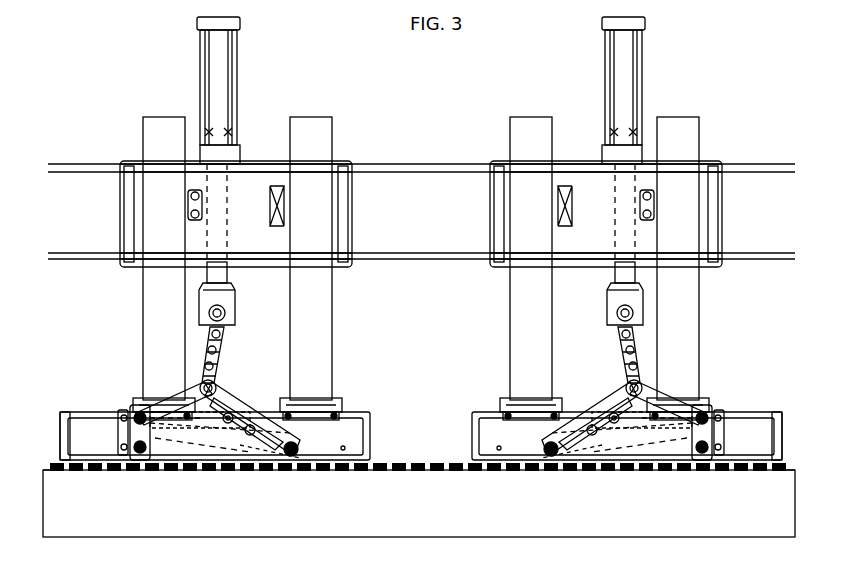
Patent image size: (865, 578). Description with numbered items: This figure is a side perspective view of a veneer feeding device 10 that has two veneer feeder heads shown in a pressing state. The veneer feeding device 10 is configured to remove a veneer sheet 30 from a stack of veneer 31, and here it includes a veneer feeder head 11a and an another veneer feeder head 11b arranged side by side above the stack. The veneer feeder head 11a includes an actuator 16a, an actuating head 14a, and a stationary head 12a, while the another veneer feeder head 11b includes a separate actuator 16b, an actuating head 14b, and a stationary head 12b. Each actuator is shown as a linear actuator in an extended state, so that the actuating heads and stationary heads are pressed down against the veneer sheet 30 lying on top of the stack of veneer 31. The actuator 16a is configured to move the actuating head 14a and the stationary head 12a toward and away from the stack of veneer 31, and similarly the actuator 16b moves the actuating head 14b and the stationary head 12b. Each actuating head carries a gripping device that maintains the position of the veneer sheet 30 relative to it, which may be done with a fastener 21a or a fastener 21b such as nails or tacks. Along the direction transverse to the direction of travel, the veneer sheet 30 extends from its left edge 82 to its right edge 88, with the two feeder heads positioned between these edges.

The veneer feeding device 10 is at (55, 117).
The veneer feeder head 11a is at (133, 148).
The another veneer feeder head 11b is at (706, 145).
The stationary head 12a is at (355, 413).
The stationary head 12b is at (487, 413).
The actuating head 14a is at (80, 443).
The actuating head 14b is at (752, 448).
The actuator 16a is at (222, 112).
The separate actuator 16b is at (612, 113).
The fastener 21a is at (68, 455).
The fastener 21b is at (778, 455).
The veneer sheet 30 is at (415, 472).
The stack of veneer 31 is at (208, 512).
The left edge 82 is at (46, 472).
The right edge 88 is at (788, 472).